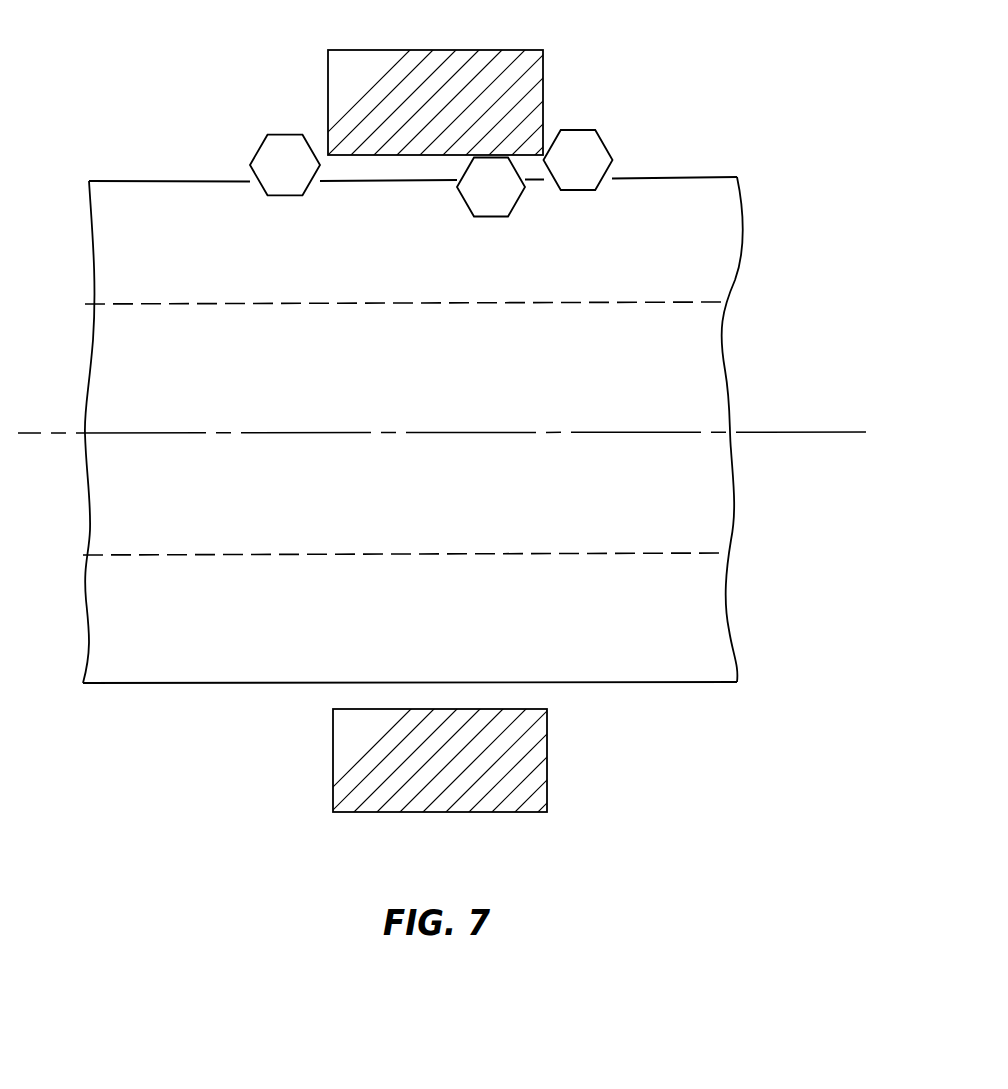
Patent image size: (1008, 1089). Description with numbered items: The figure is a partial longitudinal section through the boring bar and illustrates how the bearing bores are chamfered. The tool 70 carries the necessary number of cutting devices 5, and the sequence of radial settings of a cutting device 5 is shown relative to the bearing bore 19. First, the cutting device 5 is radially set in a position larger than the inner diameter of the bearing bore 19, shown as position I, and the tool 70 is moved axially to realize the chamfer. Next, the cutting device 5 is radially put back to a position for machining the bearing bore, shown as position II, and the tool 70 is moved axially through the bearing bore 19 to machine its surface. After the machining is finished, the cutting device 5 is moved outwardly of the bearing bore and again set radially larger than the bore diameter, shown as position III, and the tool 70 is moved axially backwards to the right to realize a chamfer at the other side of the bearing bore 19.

The cutting device 5 is at (446, 164).
The bearing bore 19 is at (393, 156).
The tool 70 is at (489, 760).
The position I of the cutting device I is at (605, 140).
The position II of the cutting device II is at (463, 198).
The position III of the cutting device III is at (265, 139).